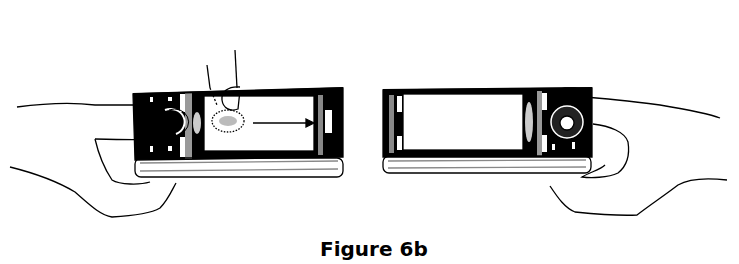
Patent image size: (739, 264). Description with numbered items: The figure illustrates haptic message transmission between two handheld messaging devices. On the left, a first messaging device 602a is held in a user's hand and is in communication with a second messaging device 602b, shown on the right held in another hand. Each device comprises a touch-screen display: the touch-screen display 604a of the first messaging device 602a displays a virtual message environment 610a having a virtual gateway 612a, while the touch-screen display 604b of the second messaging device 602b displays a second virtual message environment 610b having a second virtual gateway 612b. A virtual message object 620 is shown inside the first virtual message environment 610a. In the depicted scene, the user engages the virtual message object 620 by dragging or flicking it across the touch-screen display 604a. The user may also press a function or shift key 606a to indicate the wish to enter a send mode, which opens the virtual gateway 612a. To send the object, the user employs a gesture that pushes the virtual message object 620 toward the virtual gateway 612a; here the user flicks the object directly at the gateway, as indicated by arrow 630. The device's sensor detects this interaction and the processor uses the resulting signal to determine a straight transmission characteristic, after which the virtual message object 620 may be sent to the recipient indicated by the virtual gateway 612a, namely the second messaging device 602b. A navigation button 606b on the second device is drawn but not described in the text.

The messaging device 602a is at (188, 84).
The touch-screen display 604a is at (285, 88).
The function or shift key 606a is at (143, 96).
The virtual message environment 610a is at (222, 147).
The virtual gateway 612a is at (332, 176).
The virtual message object 620 is at (240, 126).
The arrow 630 is at (292, 112).
The messaging device 602b is at (418, 86).
The touch-screen display 604b is at (495, 88).
The navigation button of second device 606b is at (573, 112).
The second virtual message environment 610b is at (473, 140).
The second virtual gateway 612b is at (410, 156).